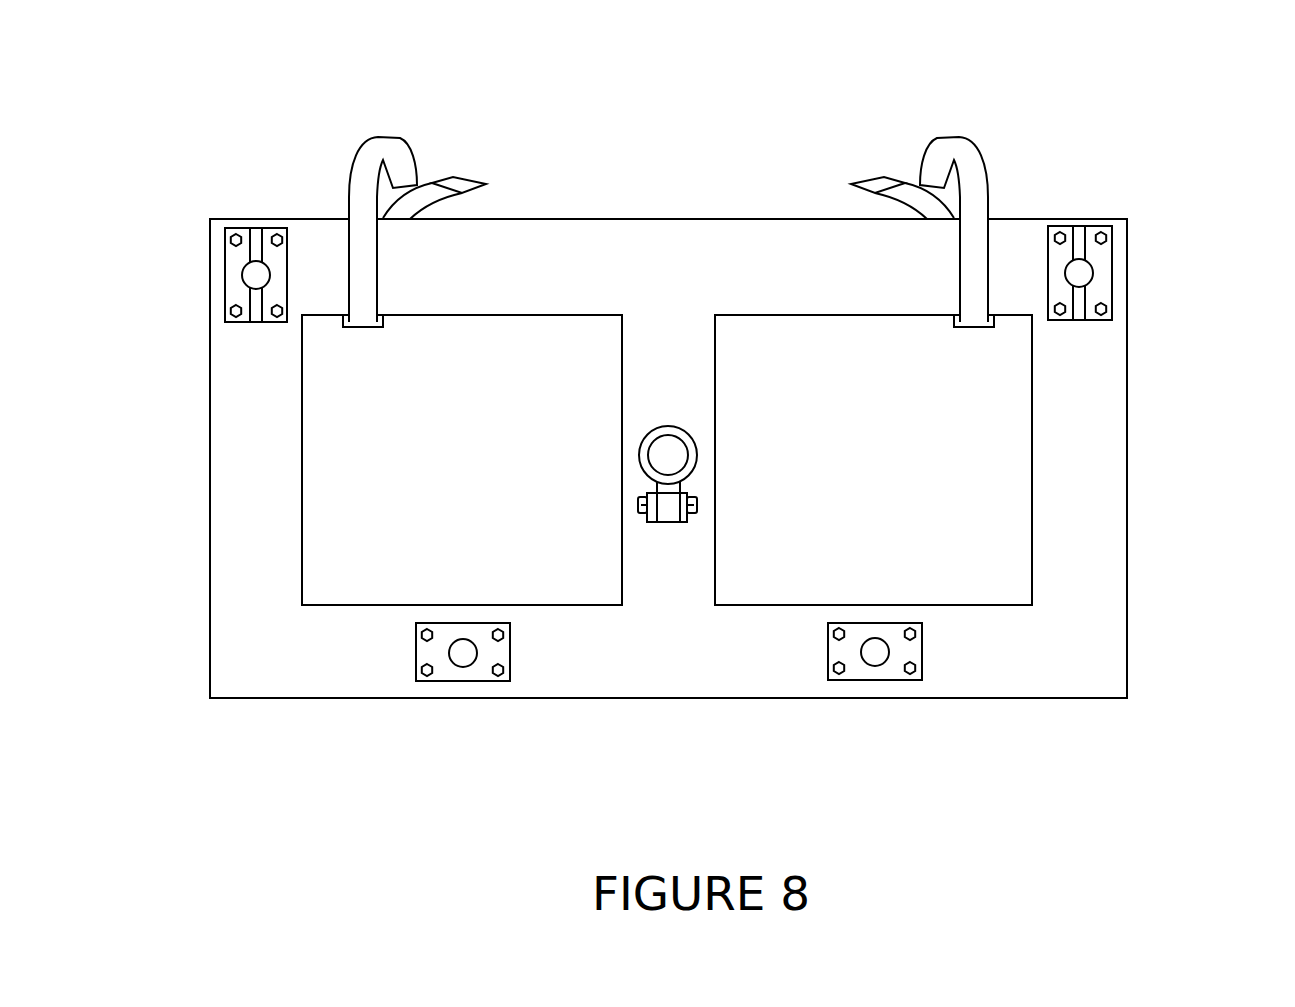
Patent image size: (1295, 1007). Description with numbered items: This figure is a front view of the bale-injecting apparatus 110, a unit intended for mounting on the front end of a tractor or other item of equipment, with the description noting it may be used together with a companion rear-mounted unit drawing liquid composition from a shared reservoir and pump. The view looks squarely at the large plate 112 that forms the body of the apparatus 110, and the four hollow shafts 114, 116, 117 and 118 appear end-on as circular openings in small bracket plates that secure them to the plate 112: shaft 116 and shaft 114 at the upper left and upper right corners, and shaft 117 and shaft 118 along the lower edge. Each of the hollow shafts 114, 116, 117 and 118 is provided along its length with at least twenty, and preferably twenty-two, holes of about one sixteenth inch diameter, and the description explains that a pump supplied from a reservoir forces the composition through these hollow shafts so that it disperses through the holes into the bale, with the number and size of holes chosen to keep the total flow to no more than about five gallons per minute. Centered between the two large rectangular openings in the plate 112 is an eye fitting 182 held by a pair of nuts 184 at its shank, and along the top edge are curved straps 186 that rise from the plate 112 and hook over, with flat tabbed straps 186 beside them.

The apparatus 110 is at (1186, 112).
The base plate 112 is at (1093, 483).
The hollow shaft 114 is at (1112, 275).
The hollow shaft 116 is at (228, 256).
The hollow shaft 117 is at (462, 657).
The hollow shaft 118 is at (878, 655).
The eye bolt 182 is at (716, 442).
The nuts 184 is at (648, 515).
The straps 186 is at (392, 138).